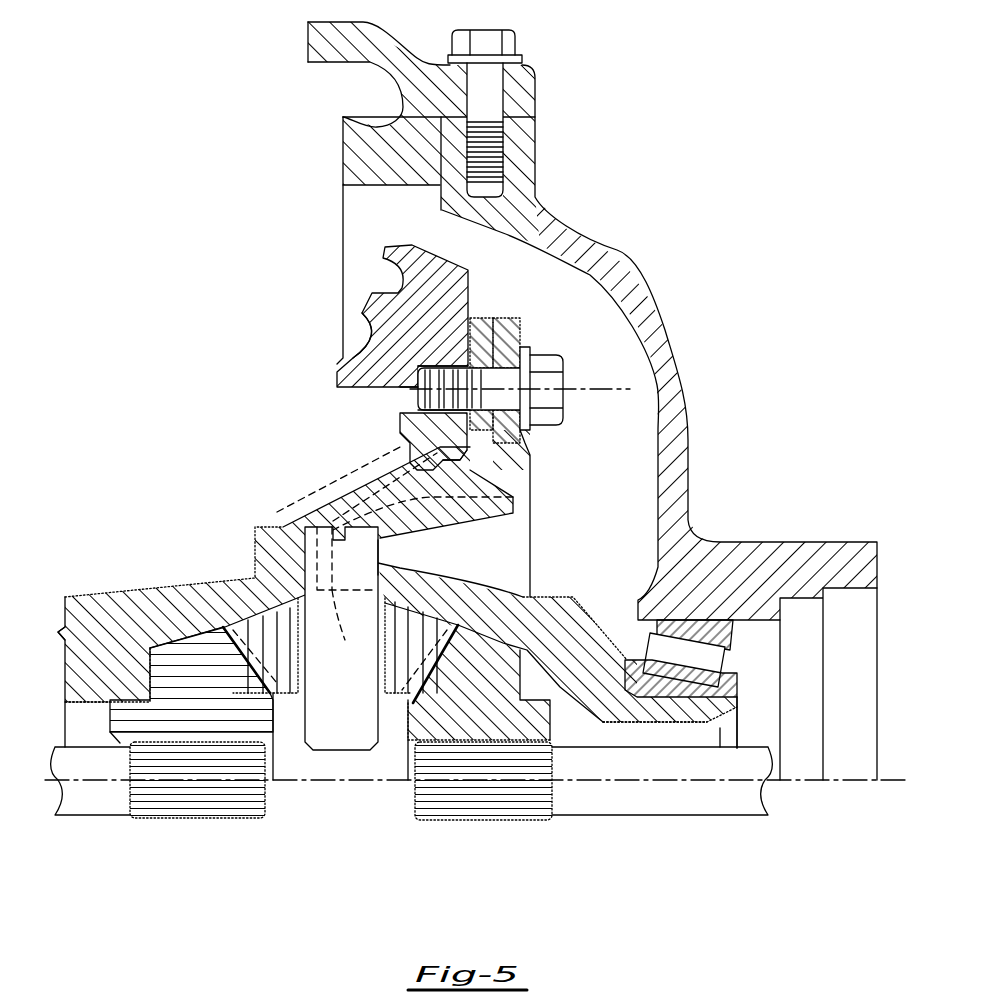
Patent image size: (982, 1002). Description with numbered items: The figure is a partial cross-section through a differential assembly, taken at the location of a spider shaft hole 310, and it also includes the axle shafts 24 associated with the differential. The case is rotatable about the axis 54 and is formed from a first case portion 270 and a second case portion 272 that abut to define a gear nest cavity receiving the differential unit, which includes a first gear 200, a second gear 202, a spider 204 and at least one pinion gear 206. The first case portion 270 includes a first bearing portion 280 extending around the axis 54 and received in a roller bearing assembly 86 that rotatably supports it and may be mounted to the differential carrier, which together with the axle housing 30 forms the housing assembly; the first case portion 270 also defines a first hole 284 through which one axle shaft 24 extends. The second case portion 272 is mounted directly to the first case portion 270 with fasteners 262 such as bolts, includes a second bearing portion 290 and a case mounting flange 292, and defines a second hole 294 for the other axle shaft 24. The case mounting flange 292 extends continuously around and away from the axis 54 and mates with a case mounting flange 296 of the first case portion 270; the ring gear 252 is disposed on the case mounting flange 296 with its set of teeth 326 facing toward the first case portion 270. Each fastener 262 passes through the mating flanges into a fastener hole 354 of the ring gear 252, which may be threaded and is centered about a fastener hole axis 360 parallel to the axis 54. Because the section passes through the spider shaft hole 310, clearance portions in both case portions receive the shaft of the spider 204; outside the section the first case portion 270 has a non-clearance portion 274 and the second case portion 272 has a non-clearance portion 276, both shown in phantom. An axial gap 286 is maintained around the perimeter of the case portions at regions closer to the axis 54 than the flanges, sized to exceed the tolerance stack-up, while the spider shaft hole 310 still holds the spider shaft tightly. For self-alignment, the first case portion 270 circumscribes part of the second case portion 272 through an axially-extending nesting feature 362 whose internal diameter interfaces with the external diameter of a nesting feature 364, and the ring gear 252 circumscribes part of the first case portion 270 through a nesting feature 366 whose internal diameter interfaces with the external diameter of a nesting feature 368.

The axle shaft 24 is at (80, 777).
The axle housing 30 is at (613, 257).
The axis 54 is at (320, 783).
The roller bearing assembly 86 is at (660, 628).
The first gear 200 is at (176, 717).
The second gear 202 is at (450, 717).
The spider 204 is at (319, 722).
The pinion gear 206 is at (267, 627).
The ring gear 252 is at (405, 250).
The fastener 262 is at (543, 348).
The first case portion 270 is at (167, 595).
The second case portion 272 is at (525, 597).
The non-clearance portion 274 is at (300, 502).
The non-clearance portion 276 is at (441, 507).
The first bearing portion 280 is at (72, 652).
The first hole 284 is at (90, 702).
The axial gap 286 is at (335, 628).
The second bearing portion 290 is at (737, 706).
The case mounting flange 292 is at (511, 318).
The second hole 294 is at (712, 726).
The case mounting flange 296 is at (482, 318).
The spider shaft hole 310 is at (381, 558).
The set of teeth 326 is at (363, 300).
The fastener hole 354 is at (437, 366).
The fastener hole axis 360 is at (576, 385).
The nesting feature 362 is at (482, 447).
The nesting feature 364 is at (472, 461).
The nesting feature 366 is at (427, 420).
The nesting feature 368 is at (438, 428).